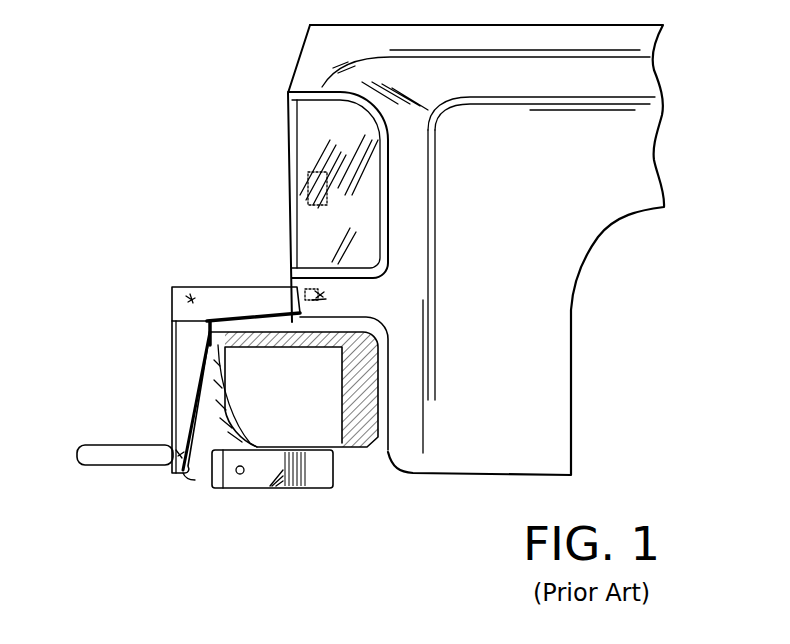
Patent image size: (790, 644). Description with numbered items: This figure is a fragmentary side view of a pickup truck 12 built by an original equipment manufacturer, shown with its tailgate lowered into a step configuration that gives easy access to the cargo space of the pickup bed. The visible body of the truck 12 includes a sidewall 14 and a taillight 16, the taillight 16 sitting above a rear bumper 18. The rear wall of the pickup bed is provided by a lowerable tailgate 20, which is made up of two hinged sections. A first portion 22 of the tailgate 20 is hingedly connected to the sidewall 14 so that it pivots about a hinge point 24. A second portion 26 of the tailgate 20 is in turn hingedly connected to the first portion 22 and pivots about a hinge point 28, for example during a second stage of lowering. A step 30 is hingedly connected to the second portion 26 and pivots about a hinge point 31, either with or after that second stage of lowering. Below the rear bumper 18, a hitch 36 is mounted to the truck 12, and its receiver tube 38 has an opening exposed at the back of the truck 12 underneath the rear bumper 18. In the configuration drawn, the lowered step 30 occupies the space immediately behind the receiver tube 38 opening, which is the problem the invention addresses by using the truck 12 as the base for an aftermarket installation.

The pickup truck 12 is at (405, 317).
The sidewall 14 is at (550, 270).
The taillight 16 is at (305, 130).
The rear bumper 18 is at (313, 406).
The tailgate 20 is at (252, 242).
The first portion 22 is at (238, 285).
The hinge point 24 is at (320, 303).
The second portion 26 is at (175, 380).
The hinge point 28 is at (167, 287).
The step 30 is at (128, 465).
The hinge point 31 is at (188, 478).
The hitch 36 is at (303, 450).
The receiver tube 38 is at (245, 478).